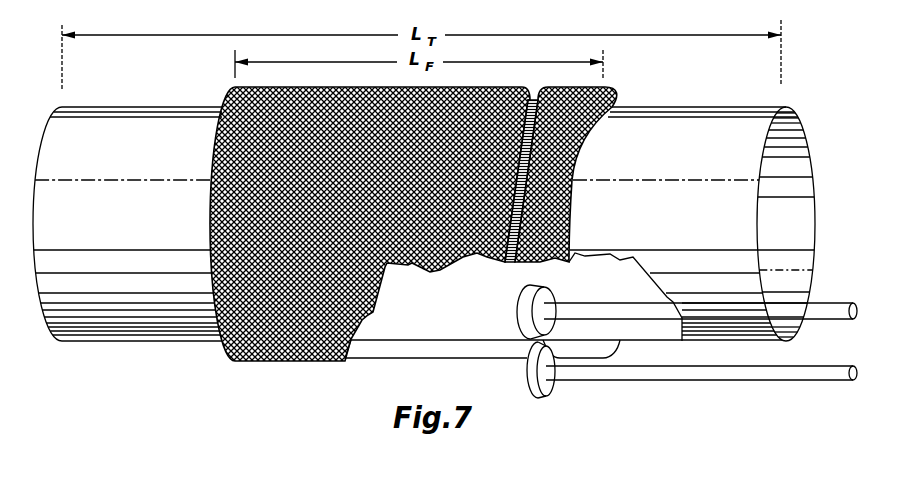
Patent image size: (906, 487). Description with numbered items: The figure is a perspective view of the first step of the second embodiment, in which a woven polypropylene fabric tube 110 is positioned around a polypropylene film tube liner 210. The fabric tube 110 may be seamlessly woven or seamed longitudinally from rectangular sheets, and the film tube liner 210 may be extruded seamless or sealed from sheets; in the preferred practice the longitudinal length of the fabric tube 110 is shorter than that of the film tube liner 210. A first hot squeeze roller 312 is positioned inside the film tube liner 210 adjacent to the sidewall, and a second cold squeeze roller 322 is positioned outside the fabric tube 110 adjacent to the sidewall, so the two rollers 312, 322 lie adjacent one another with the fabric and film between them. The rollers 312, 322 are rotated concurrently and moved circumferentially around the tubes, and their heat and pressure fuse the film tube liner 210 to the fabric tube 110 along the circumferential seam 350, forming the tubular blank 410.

The woven polypropylene fabric tube 110 is at (343, 87).
The polypropylene film tube liner 210 is at (163, 107).
The tubular blank 410 is at (800, 100).
The seam 350 is at (527, 133).
The first hot squeeze roller 312 is at (541, 284).
The second cold squeeze roller 322 is at (541, 397).